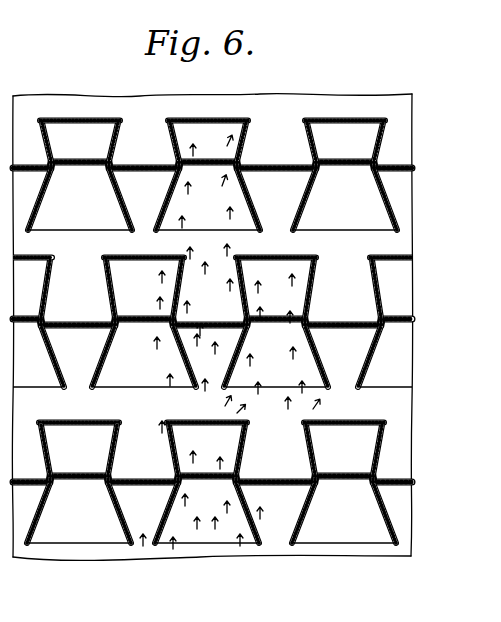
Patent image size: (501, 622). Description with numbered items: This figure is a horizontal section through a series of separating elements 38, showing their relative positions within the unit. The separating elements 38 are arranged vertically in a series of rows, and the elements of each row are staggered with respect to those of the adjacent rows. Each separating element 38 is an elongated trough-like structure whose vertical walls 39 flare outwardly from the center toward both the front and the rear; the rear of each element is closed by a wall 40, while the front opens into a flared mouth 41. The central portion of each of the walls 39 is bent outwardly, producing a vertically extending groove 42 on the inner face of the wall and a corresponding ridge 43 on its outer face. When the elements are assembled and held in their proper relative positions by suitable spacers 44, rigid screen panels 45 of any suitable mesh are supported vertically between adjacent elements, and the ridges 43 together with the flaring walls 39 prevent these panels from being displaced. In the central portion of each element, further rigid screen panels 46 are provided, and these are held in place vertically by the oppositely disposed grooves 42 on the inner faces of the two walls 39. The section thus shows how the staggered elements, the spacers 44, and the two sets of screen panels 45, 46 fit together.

The separating element 38 is at (314, 151).
The vertical walls 39 is at (174, 497).
The wall 40 is at (94, 422).
The flared mouth 41 is at (57, 536).
The groove 42 is at (104, 481).
The ridge 43 is at (109, 476).
The spacers 44 is at (277, 556).
The rigid screen panels 45 is at (66, 323).
The rigid screen panels 46 is at (140, 314).